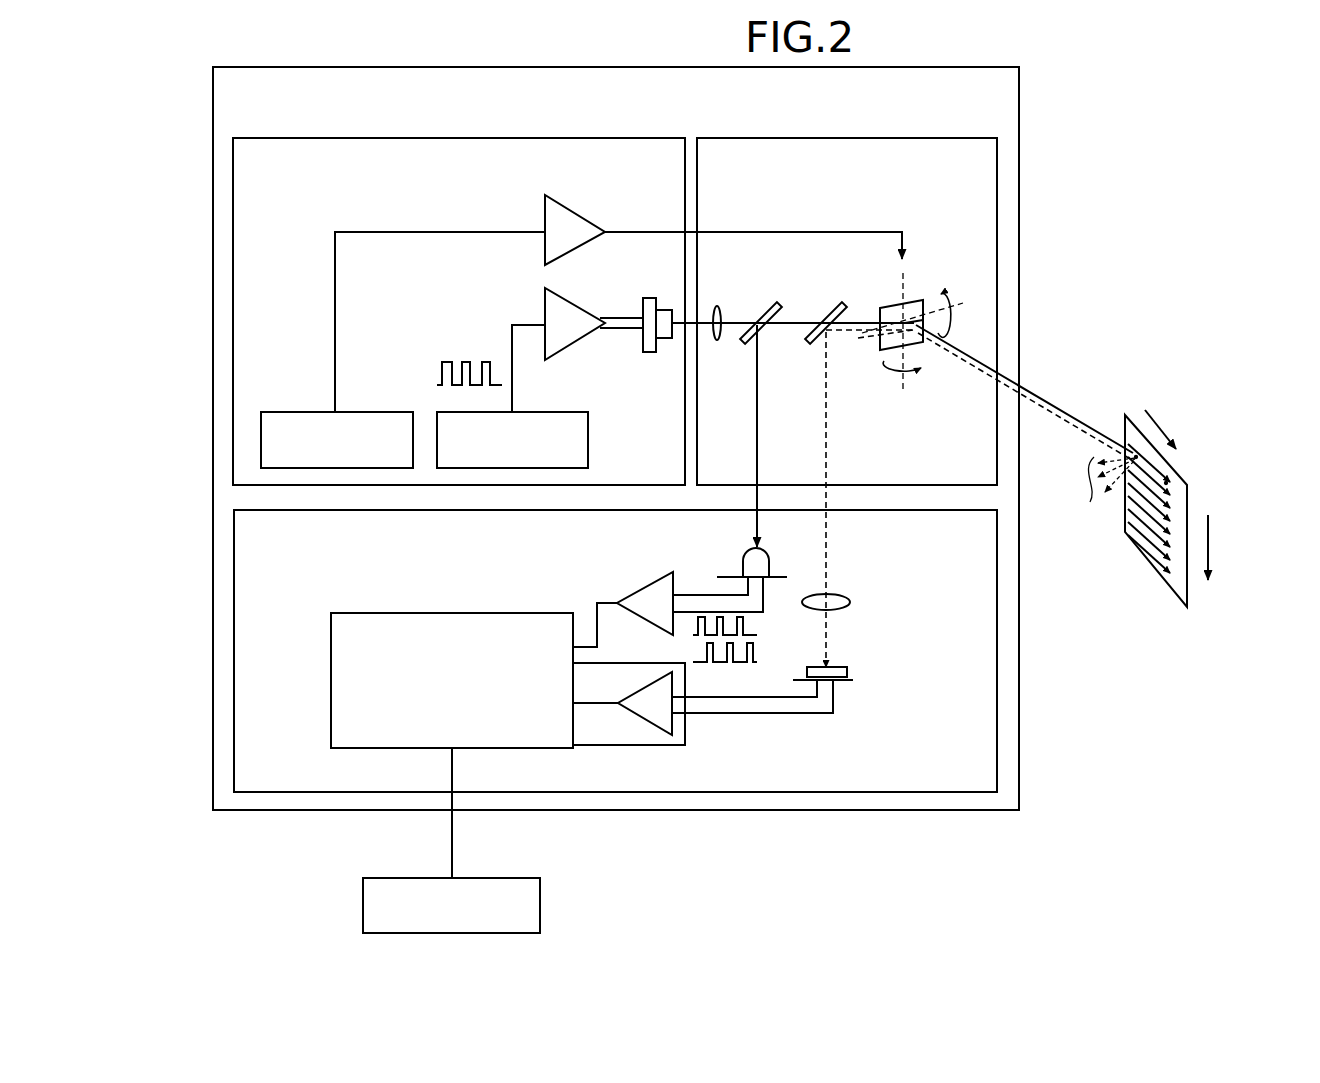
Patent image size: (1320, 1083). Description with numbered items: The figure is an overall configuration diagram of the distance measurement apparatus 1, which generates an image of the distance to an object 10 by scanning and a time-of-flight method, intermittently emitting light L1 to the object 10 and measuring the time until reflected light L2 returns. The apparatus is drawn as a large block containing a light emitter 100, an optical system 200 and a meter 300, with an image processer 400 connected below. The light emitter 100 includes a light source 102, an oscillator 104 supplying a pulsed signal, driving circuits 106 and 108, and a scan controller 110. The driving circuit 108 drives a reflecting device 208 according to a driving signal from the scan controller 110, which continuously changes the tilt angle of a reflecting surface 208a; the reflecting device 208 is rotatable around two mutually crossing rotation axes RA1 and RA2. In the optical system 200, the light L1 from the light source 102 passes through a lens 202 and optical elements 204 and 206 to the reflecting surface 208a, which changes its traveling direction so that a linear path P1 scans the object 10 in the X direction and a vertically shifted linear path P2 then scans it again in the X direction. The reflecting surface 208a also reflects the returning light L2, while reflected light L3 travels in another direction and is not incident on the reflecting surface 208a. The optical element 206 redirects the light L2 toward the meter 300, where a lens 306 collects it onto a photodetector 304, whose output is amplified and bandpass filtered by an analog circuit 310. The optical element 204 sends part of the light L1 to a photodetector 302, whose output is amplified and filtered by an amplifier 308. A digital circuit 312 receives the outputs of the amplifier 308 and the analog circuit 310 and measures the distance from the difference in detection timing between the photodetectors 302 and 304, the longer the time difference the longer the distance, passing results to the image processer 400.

The distance measurement apparatus 1 is at (1150, 134).
The light emitter 100 is at (379, 138).
The light source 102 is at (650, 352).
The oscillator 104 is at (545, 412).
The driving circuit 106 is at (545, 302).
The driving circuit 108 is at (545, 210).
The scan controller 110 is at (364, 412).
The optical system 200 is at (848, 138).
The lens 202 is at (712, 305).
The optical element 204 is at (770, 303).
The optical element 206 is at (835, 303).
The reflecting device 208 is at (915, 298).
The reflecting surface 208a is at (924, 343).
The meter 300 is at (234, 640).
The photodetector 302 is at (771, 562).
The photodetector 304 is at (850, 668).
The lens 306 is at (851, 602).
The amplifier 308 is at (641, 588).
The analog circuit 310 is at (632, 746).
The digital circuit 312 is at (475, 613).
The image processer 400 is at (498, 878).
The object 10 is at (1150, 561).
The light L1 is at (790, 340).
The reflected light L2 is at (830, 548).
The reflected light L3 is at (1086, 480).
The linear path P1 is at (1138, 457).
The linear path P2 is at (1166, 483).
The rotation axis RA1 is at (902, 386).
The rotation axis RA2 is at (963, 303).